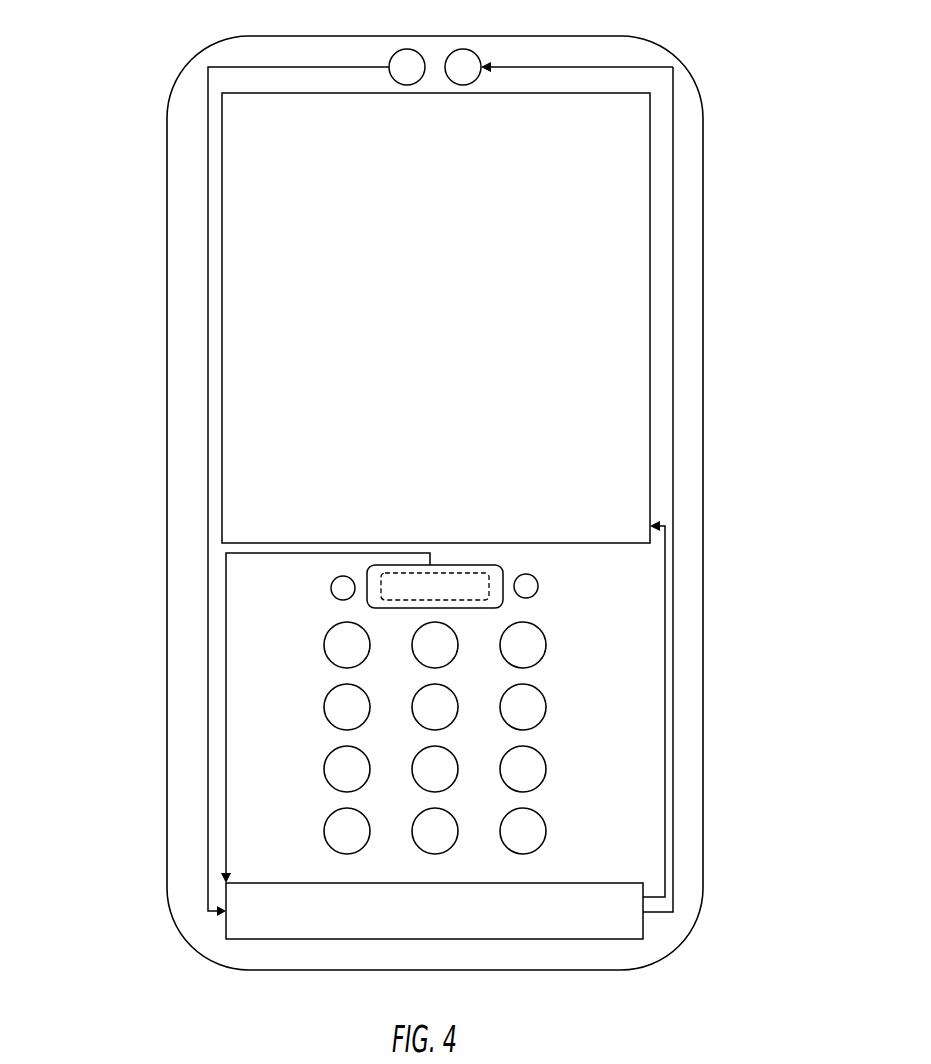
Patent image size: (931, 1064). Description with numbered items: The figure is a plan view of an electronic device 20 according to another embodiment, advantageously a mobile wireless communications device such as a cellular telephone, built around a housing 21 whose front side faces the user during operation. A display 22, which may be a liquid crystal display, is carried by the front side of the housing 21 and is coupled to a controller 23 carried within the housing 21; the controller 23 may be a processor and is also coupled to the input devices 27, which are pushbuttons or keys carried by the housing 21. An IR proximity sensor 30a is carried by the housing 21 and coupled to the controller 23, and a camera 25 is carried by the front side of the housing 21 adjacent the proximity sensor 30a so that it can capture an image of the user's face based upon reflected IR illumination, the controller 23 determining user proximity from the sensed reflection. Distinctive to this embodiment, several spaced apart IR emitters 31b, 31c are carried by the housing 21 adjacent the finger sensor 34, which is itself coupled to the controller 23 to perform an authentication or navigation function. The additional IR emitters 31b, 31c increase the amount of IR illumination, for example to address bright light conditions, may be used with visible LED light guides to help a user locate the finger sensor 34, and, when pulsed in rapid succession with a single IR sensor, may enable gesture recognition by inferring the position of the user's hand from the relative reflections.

The electronic device 20 is at (162, 44).
The housing 21 is at (167, 287).
The display 22 is at (617, 190).
The controller 23 is at (225, 930).
The camera 25 is at (471, 51).
The input devices 27 is at (324, 645).
The IR proximity sensor 30a is at (407, 49).
The IR emitter 31b is at (334, 597).
The IR emitter 31c is at (535, 578).
The finger sensor 34 is at (505, 604).